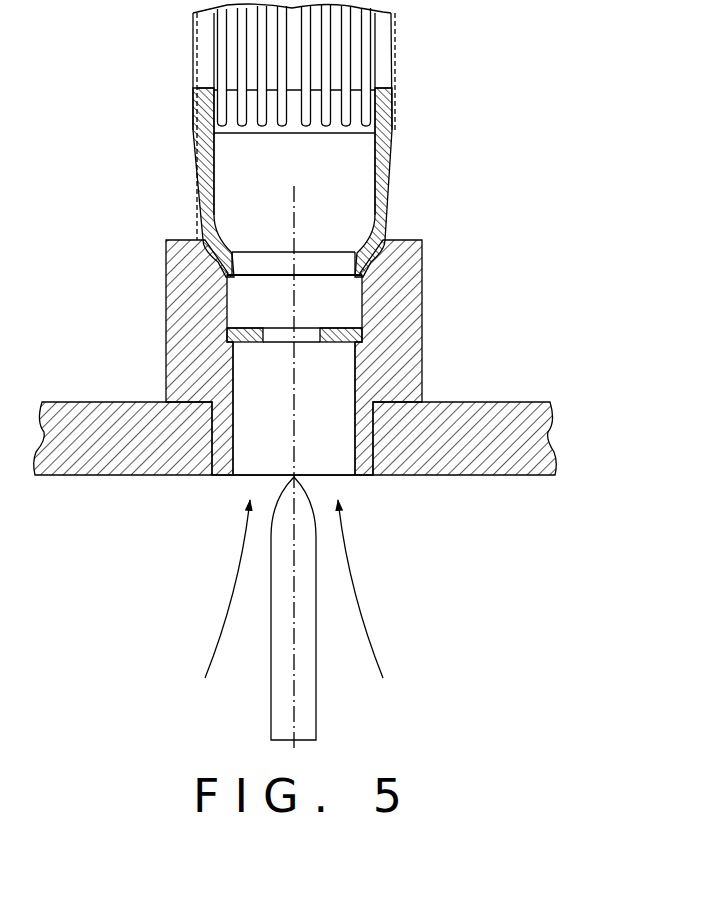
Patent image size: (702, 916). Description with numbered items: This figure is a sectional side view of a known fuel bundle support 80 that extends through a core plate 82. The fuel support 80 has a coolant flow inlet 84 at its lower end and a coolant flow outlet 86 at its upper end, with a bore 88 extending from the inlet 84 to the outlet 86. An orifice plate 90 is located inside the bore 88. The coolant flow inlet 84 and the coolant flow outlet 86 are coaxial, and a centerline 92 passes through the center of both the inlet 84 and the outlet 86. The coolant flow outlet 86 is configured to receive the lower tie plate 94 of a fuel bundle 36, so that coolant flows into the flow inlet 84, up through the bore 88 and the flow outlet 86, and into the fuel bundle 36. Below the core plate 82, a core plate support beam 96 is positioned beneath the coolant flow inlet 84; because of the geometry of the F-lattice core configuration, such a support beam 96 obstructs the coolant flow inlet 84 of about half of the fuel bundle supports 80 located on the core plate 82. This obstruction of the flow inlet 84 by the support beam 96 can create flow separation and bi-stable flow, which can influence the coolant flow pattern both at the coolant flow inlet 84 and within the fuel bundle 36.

The fuel bundle 36 is at (400, 77).
The fuel bundle support 80 is at (458, 242).
The core plate 82 is at (498, 402).
The coolant flow inlet 84 is at (342, 477).
The coolant flow outlet 86 is at (333, 265).
The bore 88 is at (253, 380).
The orifice plate 90 is at (358, 340).
The centerline 92 is at (295, 202).
The lower tie plate 94 is at (197, 198).
The core plate support beam 96 is at (316, 727).